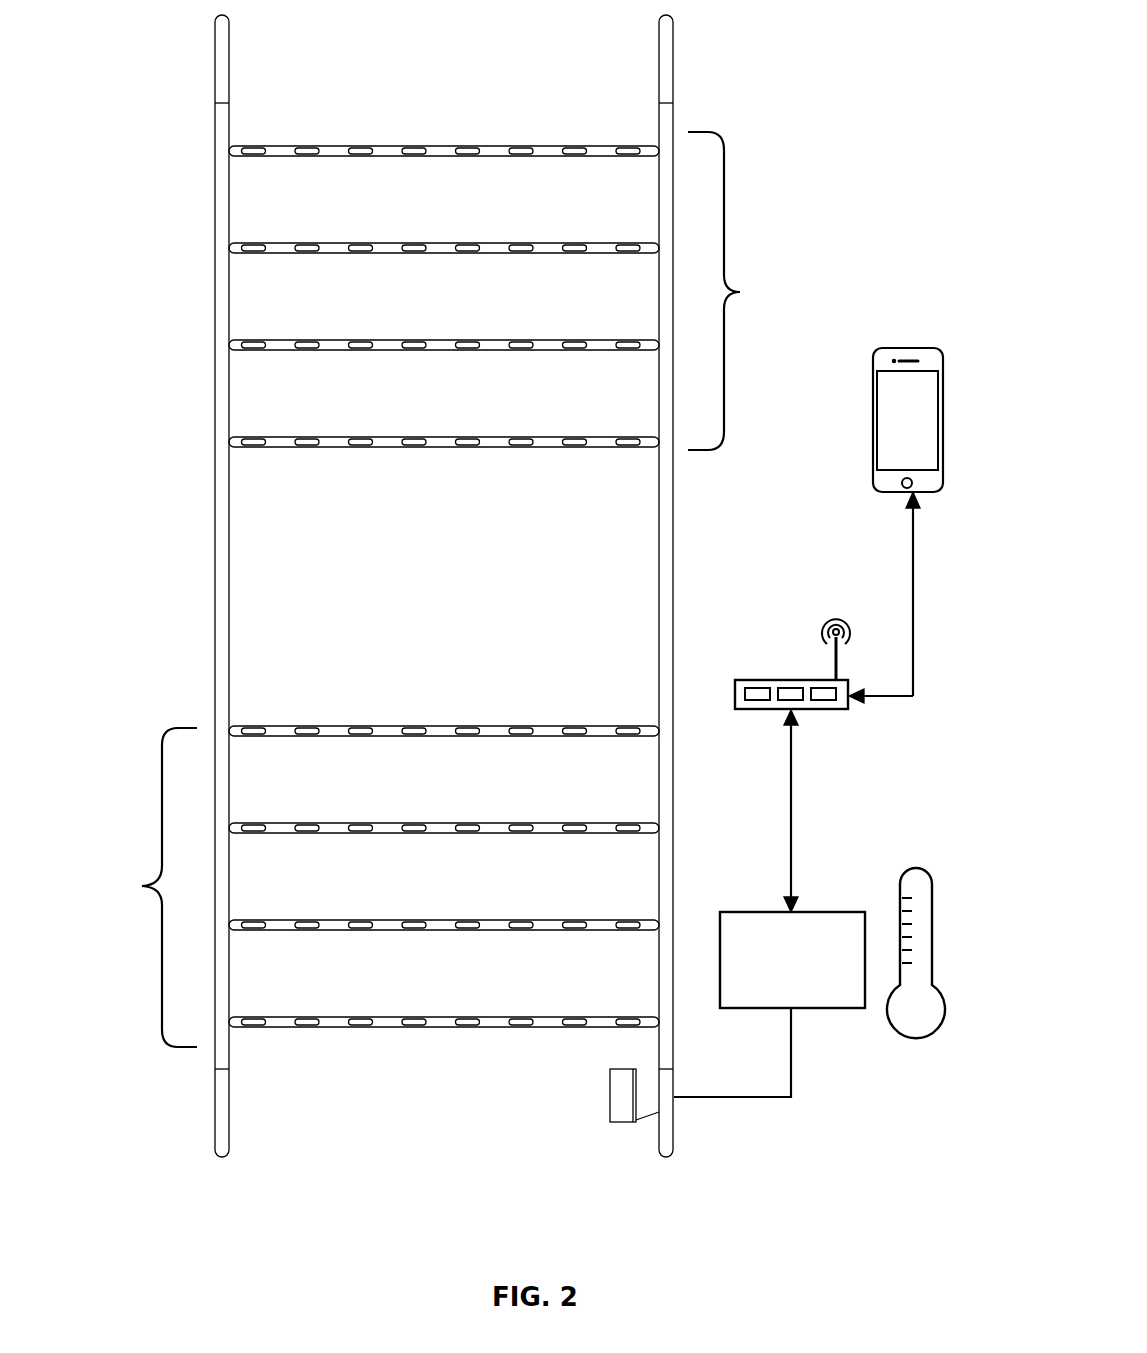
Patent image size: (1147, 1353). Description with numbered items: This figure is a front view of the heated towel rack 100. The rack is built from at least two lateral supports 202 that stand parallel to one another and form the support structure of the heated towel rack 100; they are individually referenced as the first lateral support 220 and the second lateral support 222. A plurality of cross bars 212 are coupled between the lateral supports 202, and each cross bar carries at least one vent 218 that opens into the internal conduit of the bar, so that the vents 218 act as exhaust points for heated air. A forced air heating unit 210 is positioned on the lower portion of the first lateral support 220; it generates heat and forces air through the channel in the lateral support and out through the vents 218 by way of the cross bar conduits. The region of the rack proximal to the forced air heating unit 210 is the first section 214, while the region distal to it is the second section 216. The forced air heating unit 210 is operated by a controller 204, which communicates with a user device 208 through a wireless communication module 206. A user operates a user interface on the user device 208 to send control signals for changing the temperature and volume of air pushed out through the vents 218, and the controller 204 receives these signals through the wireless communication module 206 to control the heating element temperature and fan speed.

The heated towel rack 100 is at (903, 52).
The lateral supports 202 is at (659, 101).
The controller 204 is at (809, 993).
The wireless communication module 206 is at (810, 598).
The user device 208 is at (925, 438).
The forced air heating unit 210 is at (608, 1097).
The cross bars 212 is at (228, 150).
The first section 214 is at (160, 850).
The second section 216 is at (740, 292).
The vent 218 is at (631, 727).
The first lateral support 220 is at (692, 83).
The second lateral support 222 is at (188, 92).